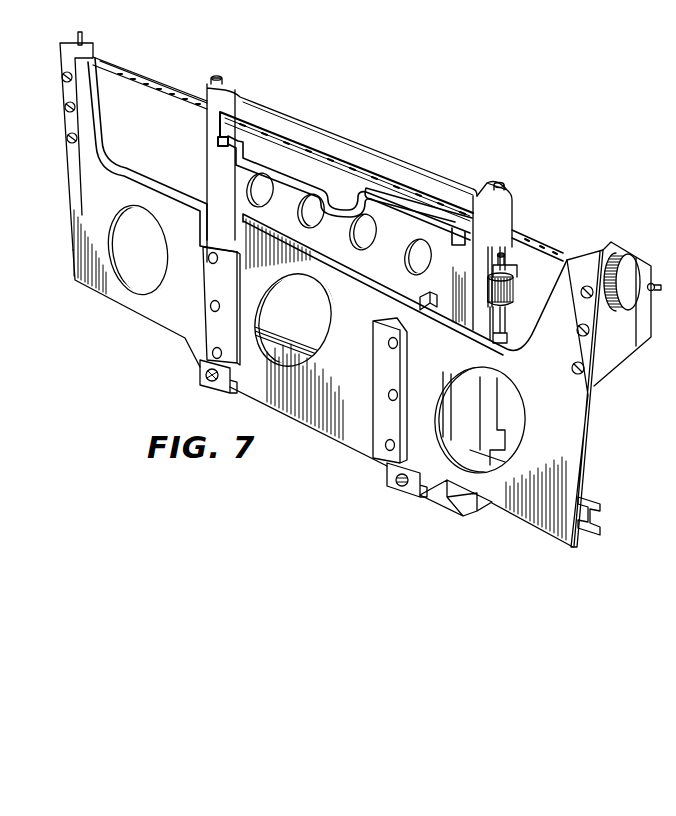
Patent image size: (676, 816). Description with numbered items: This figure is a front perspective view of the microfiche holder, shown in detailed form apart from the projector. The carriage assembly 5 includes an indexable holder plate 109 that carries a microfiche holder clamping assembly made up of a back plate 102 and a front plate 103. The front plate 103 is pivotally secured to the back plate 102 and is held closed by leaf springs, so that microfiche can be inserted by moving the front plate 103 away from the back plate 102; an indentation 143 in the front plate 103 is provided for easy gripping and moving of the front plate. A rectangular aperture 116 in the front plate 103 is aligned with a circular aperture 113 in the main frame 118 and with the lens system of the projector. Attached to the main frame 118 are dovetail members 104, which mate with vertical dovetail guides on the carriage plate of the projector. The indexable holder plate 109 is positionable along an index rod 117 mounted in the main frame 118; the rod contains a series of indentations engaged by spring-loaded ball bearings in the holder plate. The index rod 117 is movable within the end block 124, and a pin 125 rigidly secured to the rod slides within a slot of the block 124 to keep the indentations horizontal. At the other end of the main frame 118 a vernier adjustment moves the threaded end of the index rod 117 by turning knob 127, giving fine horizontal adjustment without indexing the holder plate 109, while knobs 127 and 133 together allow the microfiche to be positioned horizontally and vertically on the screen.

The carriage assembly 5 is at (260, 94).
The back plate 102 is at (453, 250).
The front plate 103 is at (395, 210).
The dovetail members 104 is at (232, 357).
The indexable holder plate 109 is at (487, 208).
The circular aperture 113 is at (320, 323).
The rectangular aperture 116 is at (433, 303).
The index rod 117 is at (547, 240).
The main frame 118 is at (584, 428).
The end block 124 is at (96, 60).
The pin 125 is at (84, 37).
The knob 127 is at (638, 253).
The knob 133 is at (512, 300).
The indentation 143 is at (347, 173).